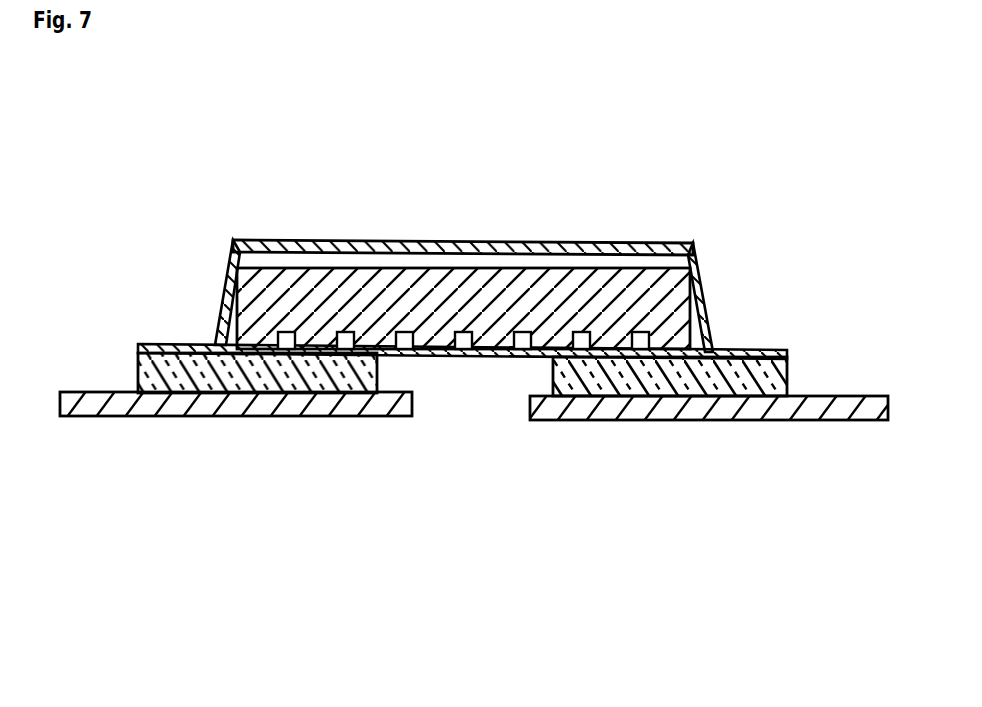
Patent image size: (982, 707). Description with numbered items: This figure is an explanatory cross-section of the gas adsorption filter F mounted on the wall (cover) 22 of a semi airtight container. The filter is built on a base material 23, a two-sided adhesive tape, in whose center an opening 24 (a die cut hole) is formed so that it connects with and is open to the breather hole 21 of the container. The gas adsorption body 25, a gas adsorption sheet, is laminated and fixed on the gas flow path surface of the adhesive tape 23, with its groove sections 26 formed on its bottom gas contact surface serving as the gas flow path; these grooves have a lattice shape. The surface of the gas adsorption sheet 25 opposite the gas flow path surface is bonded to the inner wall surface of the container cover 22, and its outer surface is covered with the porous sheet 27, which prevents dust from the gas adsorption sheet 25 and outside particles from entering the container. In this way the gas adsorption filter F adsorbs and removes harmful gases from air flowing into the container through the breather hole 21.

The breather hole 21 is at (471, 408).
The wall (cover) of semi airtight container 22 is at (337, 419).
The base material (two-sided adhesive tape) 23 is at (197, 372).
The opening (die cut hole) 24 is at (458, 377).
The gas adsorption body (gas adsorption sheet) 25 is at (622, 300).
The groove section (gas flow path) 26 is at (334, 333).
The porous sheet 27 is at (703, 300).
The gas adsorption filter F is at (468, 243).